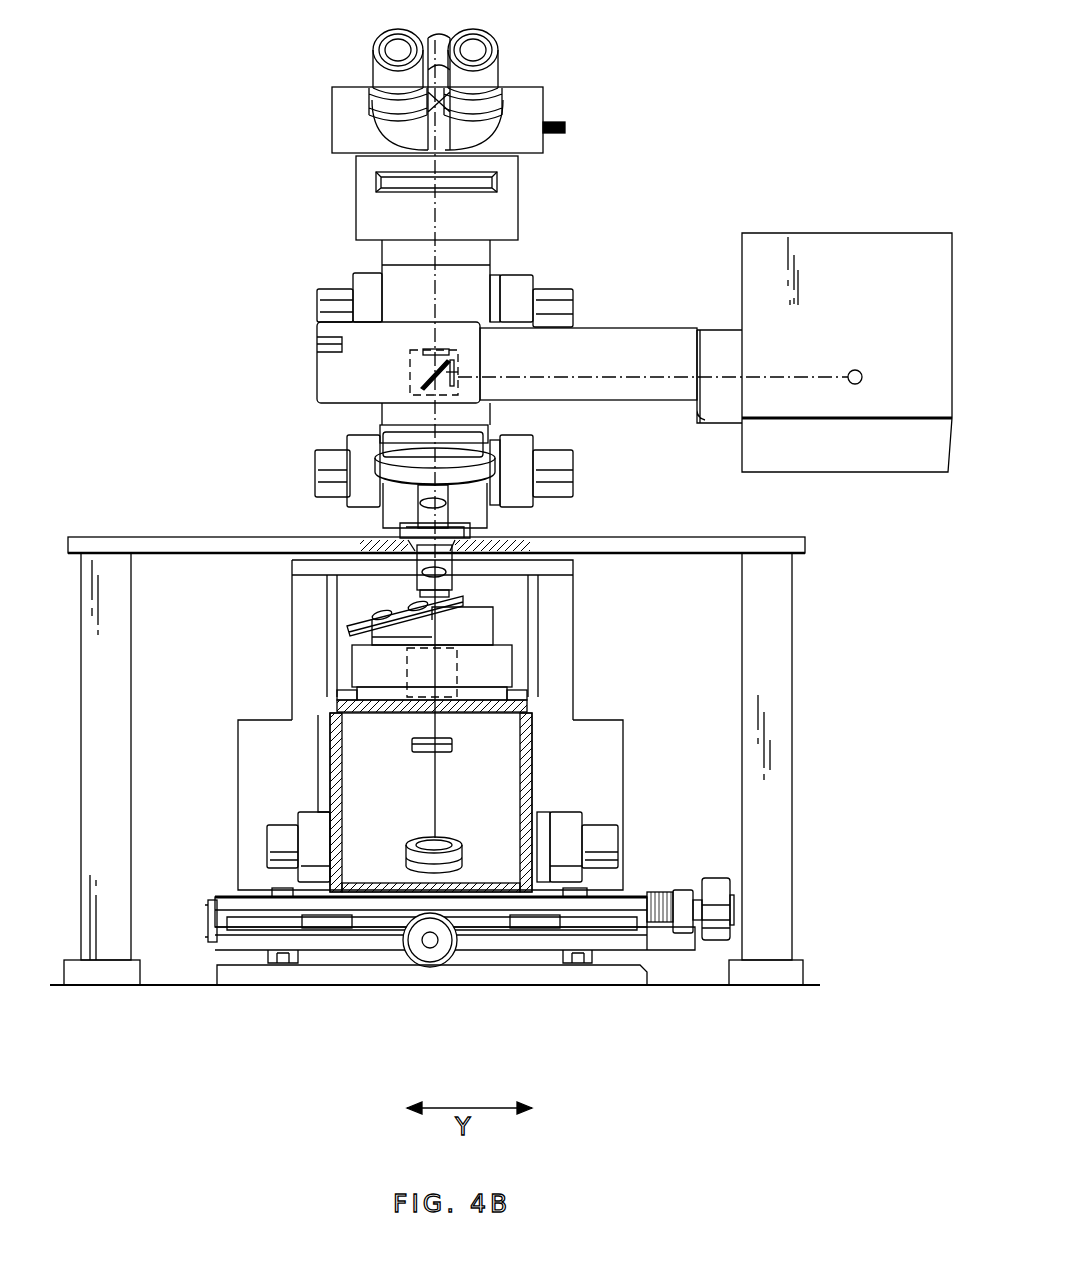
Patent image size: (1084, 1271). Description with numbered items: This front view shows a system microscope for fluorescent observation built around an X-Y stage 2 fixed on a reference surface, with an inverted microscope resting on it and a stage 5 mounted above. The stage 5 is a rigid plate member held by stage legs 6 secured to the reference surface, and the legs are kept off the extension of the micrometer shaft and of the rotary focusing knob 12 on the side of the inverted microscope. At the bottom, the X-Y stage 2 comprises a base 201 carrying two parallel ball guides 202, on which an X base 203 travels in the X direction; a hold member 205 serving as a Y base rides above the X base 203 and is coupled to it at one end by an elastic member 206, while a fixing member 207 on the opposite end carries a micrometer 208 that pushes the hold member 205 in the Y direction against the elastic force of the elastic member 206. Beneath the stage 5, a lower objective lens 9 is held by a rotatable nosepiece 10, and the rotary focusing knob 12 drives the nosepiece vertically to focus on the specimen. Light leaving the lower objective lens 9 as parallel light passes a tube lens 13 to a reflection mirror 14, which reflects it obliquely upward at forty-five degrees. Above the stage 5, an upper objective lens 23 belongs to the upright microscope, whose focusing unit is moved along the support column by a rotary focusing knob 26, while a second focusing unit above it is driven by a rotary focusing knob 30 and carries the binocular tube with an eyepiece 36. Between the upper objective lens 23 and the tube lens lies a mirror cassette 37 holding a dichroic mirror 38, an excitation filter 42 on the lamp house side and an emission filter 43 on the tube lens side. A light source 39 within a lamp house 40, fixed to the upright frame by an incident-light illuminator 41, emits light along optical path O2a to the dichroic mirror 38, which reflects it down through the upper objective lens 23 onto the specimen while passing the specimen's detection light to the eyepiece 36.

The X-Y stage 2 is at (197, 922).
The stage 5 is at (173, 538).
The stage legs 6 is at (116, 620).
The lower objective lens 9 is at (417, 580).
The nosepiece 10 is at (463, 602).
The rotary focusing knob 12 is at (563, 830).
The tube lens 13 is at (440, 753).
The reflection mirror 14 is at (450, 838).
The upper objective lens 23 is at (445, 515).
The rotary focusing knob 26 is at (573, 468).
The rotary focusing knob 30 is at (556, 298).
The eyepiece 36 is at (500, 70).
The mirror cassette 37 is at (410, 375).
The dichroic mirror 38 is at (420, 386).
The light source 39 is at (857, 368).
The lamp house 40 is at (862, 240).
The incident-light illuminator 41 is at (675, 340).
The excitation filter 42 is at (456, 372).
The emission filter 43 is at (441, 348).
The optical path O2a is at (552, 376).
The base 201 is at (470, 987).
The ball guides 202 is at (283, 965).
The X base 203 is at (385, 950).
The hold member 205 is at (375, 905).
The elastic member 206 is at (212, 928).
The fixing member 207 is at (682, 925).
The micrometer 208 is at (712, 884).